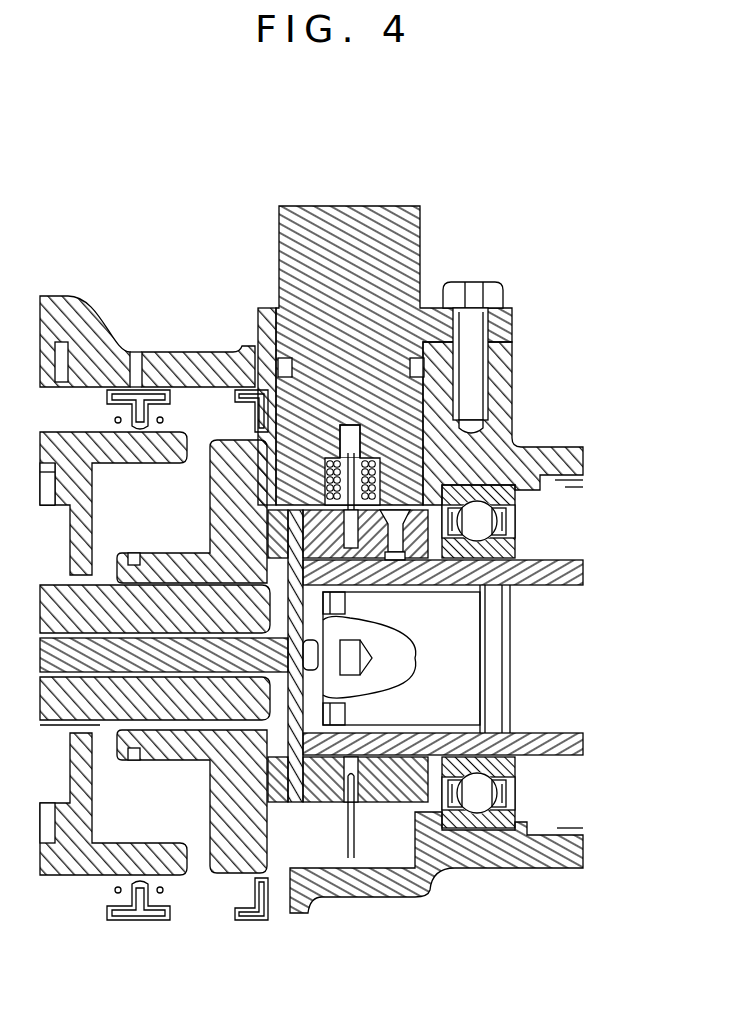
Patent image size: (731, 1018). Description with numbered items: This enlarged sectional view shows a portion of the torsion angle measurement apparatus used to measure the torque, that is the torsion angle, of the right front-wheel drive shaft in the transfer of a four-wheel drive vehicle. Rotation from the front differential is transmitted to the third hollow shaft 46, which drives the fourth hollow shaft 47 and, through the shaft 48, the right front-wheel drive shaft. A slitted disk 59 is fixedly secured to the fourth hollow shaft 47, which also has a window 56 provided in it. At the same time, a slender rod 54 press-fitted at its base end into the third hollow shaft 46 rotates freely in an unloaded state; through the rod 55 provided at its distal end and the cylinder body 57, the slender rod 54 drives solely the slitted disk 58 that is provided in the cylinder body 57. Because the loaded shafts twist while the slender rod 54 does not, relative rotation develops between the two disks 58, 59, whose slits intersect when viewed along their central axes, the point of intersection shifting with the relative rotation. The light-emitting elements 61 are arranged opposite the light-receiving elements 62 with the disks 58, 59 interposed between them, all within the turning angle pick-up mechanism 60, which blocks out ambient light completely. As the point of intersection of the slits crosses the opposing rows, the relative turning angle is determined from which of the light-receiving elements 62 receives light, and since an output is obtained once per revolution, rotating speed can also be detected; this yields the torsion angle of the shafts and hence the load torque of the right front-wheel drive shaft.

The third hollow shaft 46 is at (113, 715).
The fourth hollow shaft 47 is at (257, 817).
The shaft 48 is at (563, 574).
The slender rod 54 is at (173, 657).
The rod 55 is at (307, 757).
The window 56 is at (307, 583).
The cylinder body 57 is at (280, 473).
The slitted disk 58 is at (338, 455).
The slitted disk 59 is at (386, 478).
The turning angle pick-up mechanism 60 is at (318, 226).
The light-emitting elements 61 is at (440, 468).
The light-receiving elements 62 is at (326, 470).